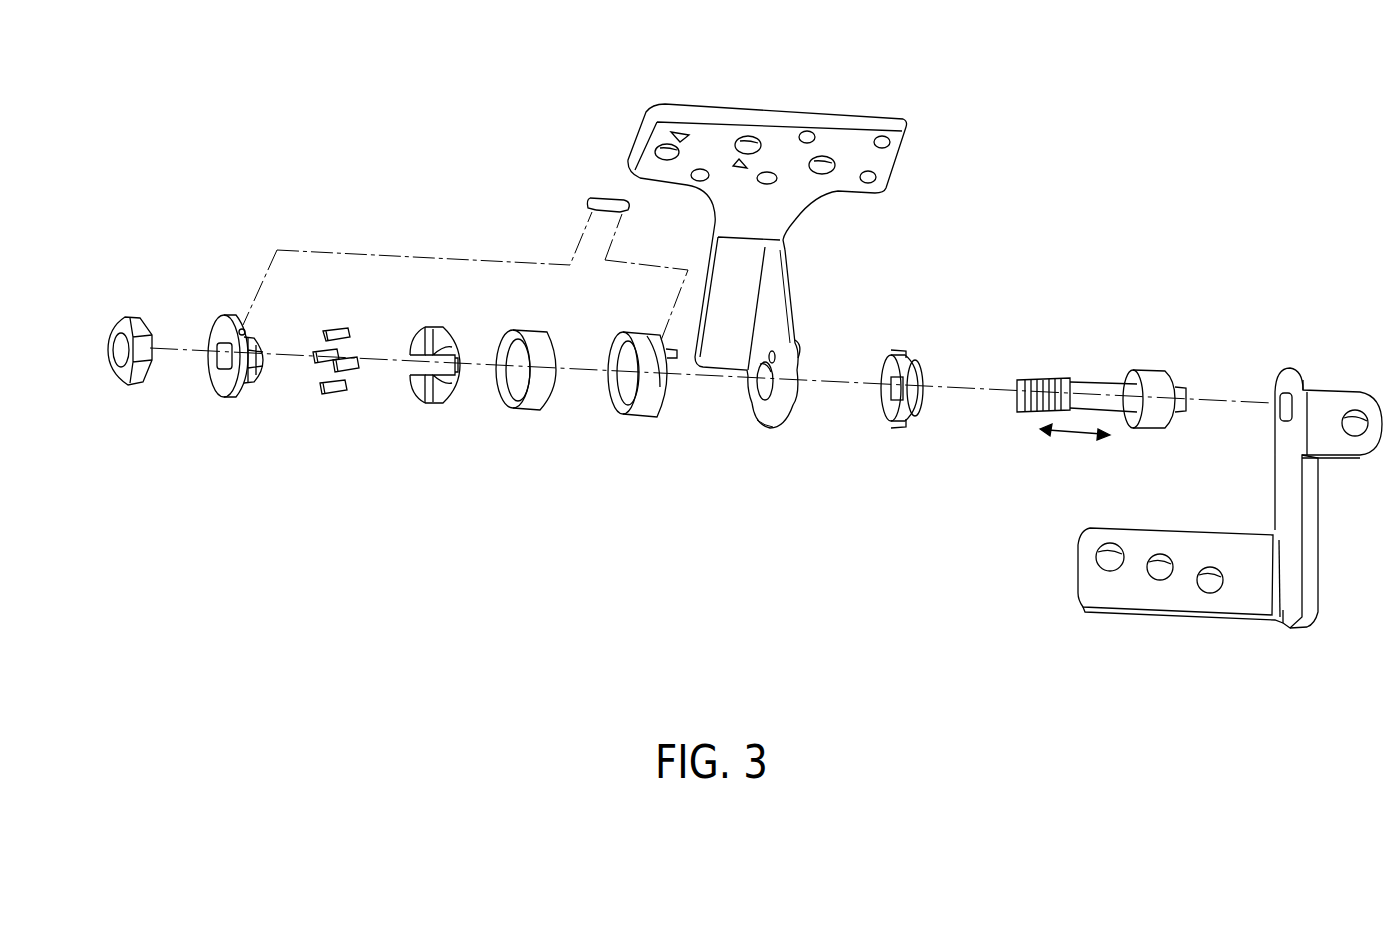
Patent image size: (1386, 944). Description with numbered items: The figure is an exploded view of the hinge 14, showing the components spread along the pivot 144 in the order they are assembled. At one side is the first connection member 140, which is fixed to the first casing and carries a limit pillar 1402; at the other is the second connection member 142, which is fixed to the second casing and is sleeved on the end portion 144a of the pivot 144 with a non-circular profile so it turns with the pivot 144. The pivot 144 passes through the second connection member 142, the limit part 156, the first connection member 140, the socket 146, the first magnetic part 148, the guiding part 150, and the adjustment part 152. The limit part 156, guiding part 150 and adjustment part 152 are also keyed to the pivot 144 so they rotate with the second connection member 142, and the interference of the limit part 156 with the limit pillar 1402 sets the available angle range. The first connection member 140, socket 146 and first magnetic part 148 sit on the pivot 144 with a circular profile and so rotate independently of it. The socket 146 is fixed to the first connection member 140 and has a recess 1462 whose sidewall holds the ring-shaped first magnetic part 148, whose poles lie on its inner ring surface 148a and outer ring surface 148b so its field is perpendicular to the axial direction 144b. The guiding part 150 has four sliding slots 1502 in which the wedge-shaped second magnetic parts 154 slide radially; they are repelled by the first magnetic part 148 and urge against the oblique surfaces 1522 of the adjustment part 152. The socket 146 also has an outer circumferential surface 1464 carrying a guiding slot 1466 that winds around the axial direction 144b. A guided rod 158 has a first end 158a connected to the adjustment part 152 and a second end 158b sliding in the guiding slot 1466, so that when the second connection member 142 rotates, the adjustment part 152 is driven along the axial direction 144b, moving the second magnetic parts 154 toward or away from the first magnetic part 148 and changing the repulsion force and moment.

The hinge 14 is at (1200, 148).
The first connection member 140 is at (767, 233).
The limit pillar 1402 is at (803, 346).
The second connection member 142 is at (1138, 600).
The pivot 144 is at (1112, 397).
The end portion 144a is at (1182, 390).
The axial direction 144b is at (1073, 440).
The socket 146 is at (661, 431).
The recess 1462 is at (612, 402).
The outer circumferential surface 1464 is at (646, 412).
The guiding slot 1466 is at (668, 394).
The first magnetic part 148 is at (500, 445).
The inner ring surface 148a is at (510, 386).
The outer ring surface 148b is at (533, 402).
The guiding part 150 is at (406, 399).
The sliding slots 1502 is at (418, 388).
The adjustment part 152 is at (247, 388).
The oblique surfaces 1522 is at (258, 358).
The second magnetic parts 154 is at (331, 396).
The limit part 156 is at (888, 428).
The guided rod 158 is at (576, 173).
The first end 158a is at (588, 208).
The second end 158b is at (628, 210).